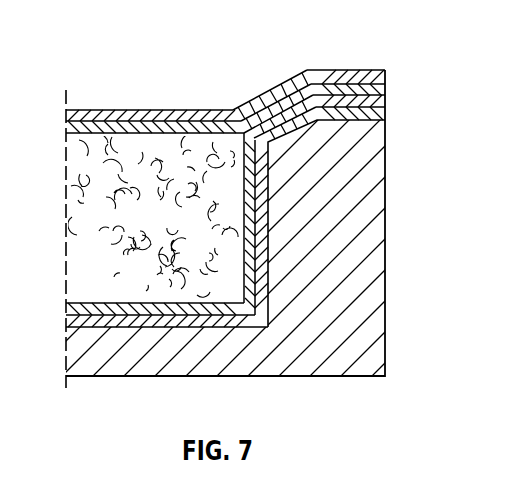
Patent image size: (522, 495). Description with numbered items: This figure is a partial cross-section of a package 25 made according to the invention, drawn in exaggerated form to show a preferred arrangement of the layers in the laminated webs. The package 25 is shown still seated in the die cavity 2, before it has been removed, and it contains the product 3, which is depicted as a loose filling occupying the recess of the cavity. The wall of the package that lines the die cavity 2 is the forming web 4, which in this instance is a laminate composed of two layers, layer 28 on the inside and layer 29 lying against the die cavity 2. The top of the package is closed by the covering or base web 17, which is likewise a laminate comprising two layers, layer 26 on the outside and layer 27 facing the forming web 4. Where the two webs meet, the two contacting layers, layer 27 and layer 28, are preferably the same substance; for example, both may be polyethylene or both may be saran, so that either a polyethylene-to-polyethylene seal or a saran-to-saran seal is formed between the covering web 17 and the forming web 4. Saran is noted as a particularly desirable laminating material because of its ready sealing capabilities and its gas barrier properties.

The die cavity 2 is at (327, 273).
The product 3 is at (155, 220).
The forming web 4 is at (142, 328).
The covering or base web 17 is at (210, 113).
The package 25 is at (177, 97).
The layer 26 is at (385, 70).
The layer 27 is at (386, 84).
The layer 28 is at (387, 97).
The layer 29 is at (386, 119).